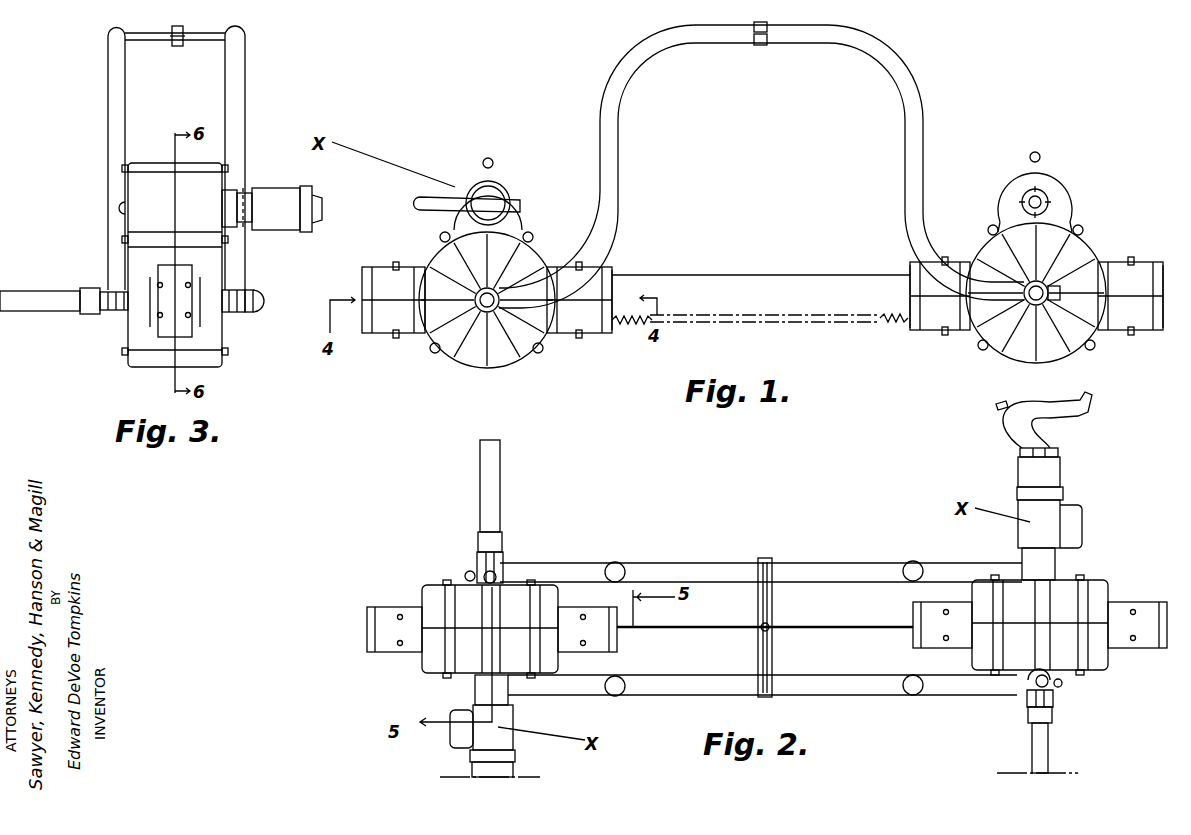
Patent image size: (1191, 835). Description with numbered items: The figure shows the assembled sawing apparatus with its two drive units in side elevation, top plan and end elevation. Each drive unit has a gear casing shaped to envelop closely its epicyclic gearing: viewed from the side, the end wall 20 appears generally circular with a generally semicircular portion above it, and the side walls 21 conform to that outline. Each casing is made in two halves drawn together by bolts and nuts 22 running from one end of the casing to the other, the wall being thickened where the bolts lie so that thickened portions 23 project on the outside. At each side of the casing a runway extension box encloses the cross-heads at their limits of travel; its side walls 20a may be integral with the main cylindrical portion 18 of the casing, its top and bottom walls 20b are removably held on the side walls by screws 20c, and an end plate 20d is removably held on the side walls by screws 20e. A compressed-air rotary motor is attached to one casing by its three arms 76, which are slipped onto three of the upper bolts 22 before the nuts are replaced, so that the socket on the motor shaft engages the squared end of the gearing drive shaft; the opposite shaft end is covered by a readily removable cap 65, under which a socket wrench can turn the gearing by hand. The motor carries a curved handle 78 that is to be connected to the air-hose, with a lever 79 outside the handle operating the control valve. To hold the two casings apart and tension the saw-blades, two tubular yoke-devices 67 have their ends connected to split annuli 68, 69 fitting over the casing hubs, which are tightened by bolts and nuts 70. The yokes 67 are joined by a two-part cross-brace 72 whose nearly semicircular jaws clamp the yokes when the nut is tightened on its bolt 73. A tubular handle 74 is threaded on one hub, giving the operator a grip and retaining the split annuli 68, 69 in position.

In FIG. 1, the main cylindrical portion 18 is at (455, 268).
In FIG. 1, the end wall 20 is at (478, 342).
In FIG. 1, the side walls 20a is at (392, 300).
In FIG. 1, the top and bottom walls 20b is at (385, 266).
In FIG. 2, the top and bottom walls 20b is at (392, 632).
In FIG. 1, the screws 20c is at (761, 299).
In FIG. 2, the screws 20c is at (400, 645).
In FIG. 3, the end plate 20d is at (185, 298).
In FIG. 1, the end plate 20d is at (362, 297).
In FIG. 2, the end plate 20d is at (367, 623).
In FIG. 3, the screws 20e is at (188, 315).
In FIG. 3, the side walls 21 is at (195, 258).
In FIG. 2, the side walls 21 is at (432, 595).
In FIG. 1, the bolts and nuts 22 is at (489, 160).
In FIG. 2, the bolts and nuts 22 is at (1080, 675).
In FIG. 1, the thickened portions 23 is at (980, 349).
In FIG. 3, the removable cap 65 is at (118, 208).
In FIG. 1, the removable cap 65 is at (1049, 202).
In FIG. 2, the removable cap 65 is at (493, 575).
In FIG. 3, the yoke-devices 67 is at (235, 105).
In FIG. 1, the yoke-devices 67 is at (905, 80).
In FIG. 2, the yoke-devices 67 is at (830, 565).
In FIG. 3, the split annulus 68 is at (250, 290).
In FIG. 1, the split annulus 68 is at (497, 336).
In FIG. 3, the split annulus 69 is at (115, 290).
In FIG. 1, the split annulus 69 is at (1030, 335).
In FIG. 2, the split annulus 69 is at (470, 570).
In FIG. 3, the bolts and nuts 70 is at (108, 312).
In FIG. 1, the bolts and nuts 70 is at (473, 298).
In FIG. 2, the bolts and nuts 70 is at (465, 577).
In FIG. 3, the cross-brace 72 is at (180, 46).
In FIG. 1, the cross-brace 72 is at (760, 46).
In FIG. 2, the cross-brace 72 is at (773, 618).
In FIG. 3, the bolt 73 is at (176, 44).
In FIG. 2, the bolt 73 is at (770, 630).
In FIG. 3, the tubular handle 74 is at (58, 303).
In FIG. 2, the tubular handle 74 is at (487, 502).
In FIG. 1, the arms 76 is at (515, 222).
In FIG. 3, the handle 78 is at (365, 205).
In FIG. 2, the handle 78 is at (1050, 410).
In FIG. 2, the lever 79 is at (998, 405).